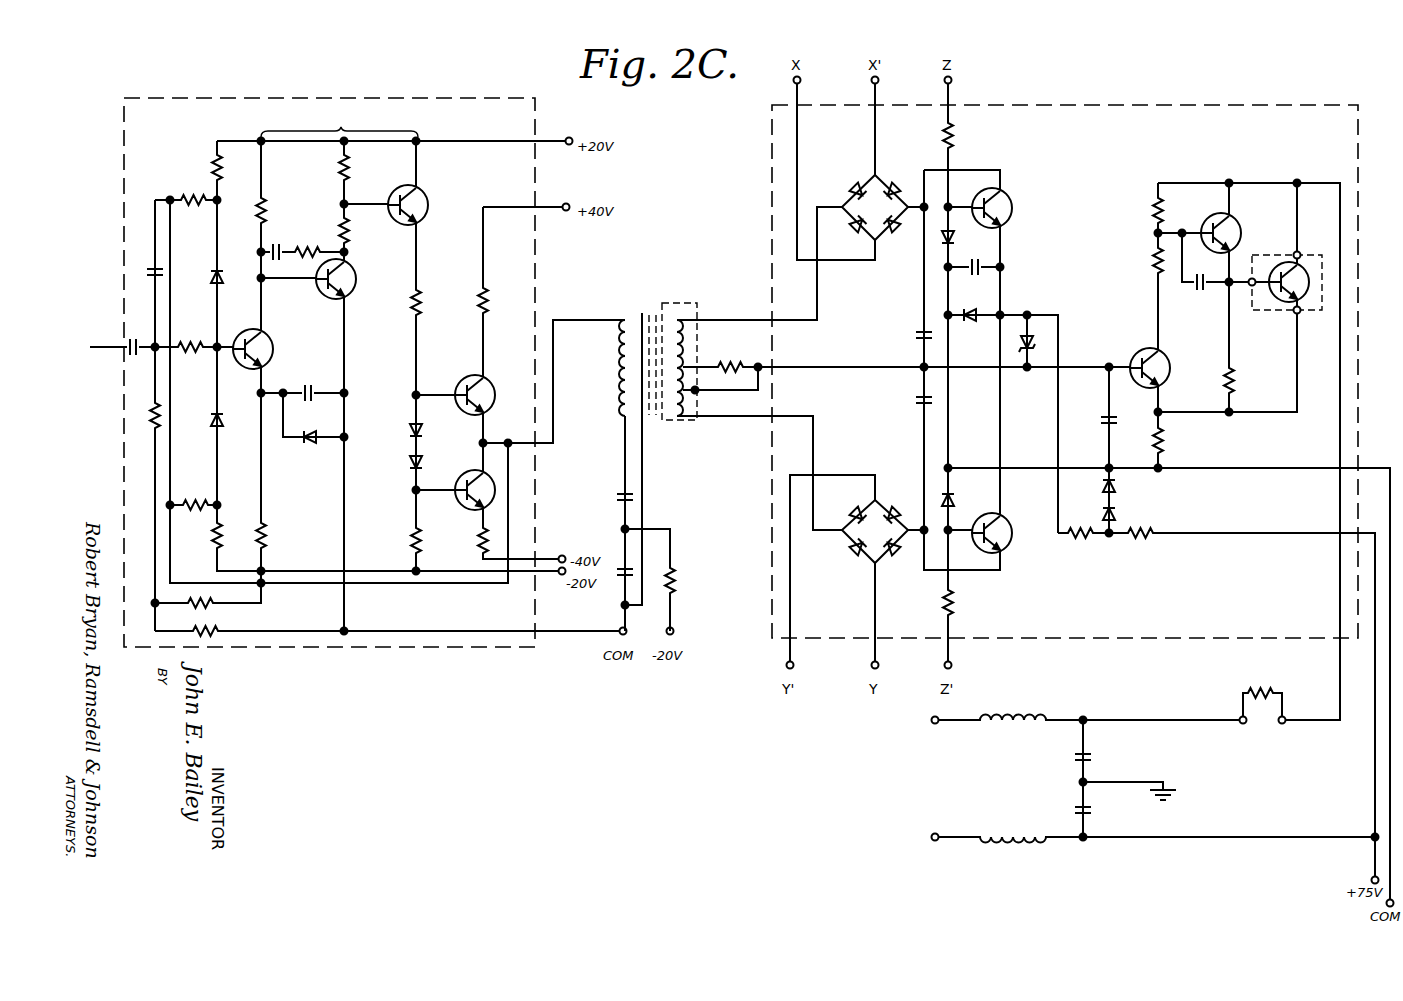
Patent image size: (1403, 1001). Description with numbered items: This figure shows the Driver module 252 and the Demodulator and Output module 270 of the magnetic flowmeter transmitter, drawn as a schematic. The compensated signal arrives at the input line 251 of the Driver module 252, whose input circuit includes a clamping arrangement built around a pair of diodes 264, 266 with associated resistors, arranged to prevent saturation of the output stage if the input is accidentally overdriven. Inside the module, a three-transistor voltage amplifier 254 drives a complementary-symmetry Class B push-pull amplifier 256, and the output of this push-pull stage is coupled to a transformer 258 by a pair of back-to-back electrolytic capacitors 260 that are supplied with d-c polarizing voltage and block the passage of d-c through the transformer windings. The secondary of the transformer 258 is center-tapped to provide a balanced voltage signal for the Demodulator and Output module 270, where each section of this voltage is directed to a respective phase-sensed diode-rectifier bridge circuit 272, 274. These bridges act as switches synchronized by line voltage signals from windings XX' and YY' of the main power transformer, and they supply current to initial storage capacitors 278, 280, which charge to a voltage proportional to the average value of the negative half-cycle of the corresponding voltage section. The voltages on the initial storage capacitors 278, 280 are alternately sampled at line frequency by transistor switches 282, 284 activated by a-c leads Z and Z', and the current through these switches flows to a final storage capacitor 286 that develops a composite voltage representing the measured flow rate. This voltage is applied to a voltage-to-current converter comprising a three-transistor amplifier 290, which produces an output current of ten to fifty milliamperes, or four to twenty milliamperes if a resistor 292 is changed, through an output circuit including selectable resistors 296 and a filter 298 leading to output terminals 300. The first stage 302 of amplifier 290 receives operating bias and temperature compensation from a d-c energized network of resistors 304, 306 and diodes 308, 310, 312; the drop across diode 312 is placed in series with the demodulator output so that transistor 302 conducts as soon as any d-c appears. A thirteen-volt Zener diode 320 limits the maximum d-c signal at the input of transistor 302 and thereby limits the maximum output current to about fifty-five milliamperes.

The input signal line 251 is at (121, 346).
The Driver module 252 is at (388, 96).
The three-transistor voltage amplifier 254 is at (352, 124).
The complementary-symmetry Class B push-pull amplifier 256 is at (464, 376).
The transformer 258 is at (647, 296).
The back-to-back electrolytic capacitors 260 is at (612, 568).
The diode 264 is at (213, 274).
The diode 266 is at (211, 421).
The Demodulator and Output module 270 is at (1150, 99).
The diode-rectifier bridge circuit 272 is at (847, 187).
The diode-rectifier bridge circuit 274 is at (887, 492).
The initial storage capacitor 278 is at (914, 337).
The initial storage capacitor 280 is at (914, 404).
The transistor switch 282 is at (1013, 216).
The transistor switch 284 is at (1006, 548).
The final storage capacitor 286 is at (1102, 416).
The three-transistor amplifier 290 is at (1141, 220).
The resistor 292 is at (1165, 439).
The selectable resistors 296 is at (1256, 692).
The filter 298 is at (1033, 788).
The output terminals 300 is at (940, 828).
The first stage 302 is at (1143, 350).
The resistor 304 is at (1085, 541).
The resistor 306 is at (1145, 541).
The diode 308 is at (1118, 487).
The diode 310 is at (1118, 517).
The diode 312 is at (976, 320).
The Zener diode 320 is at (1040, 341).